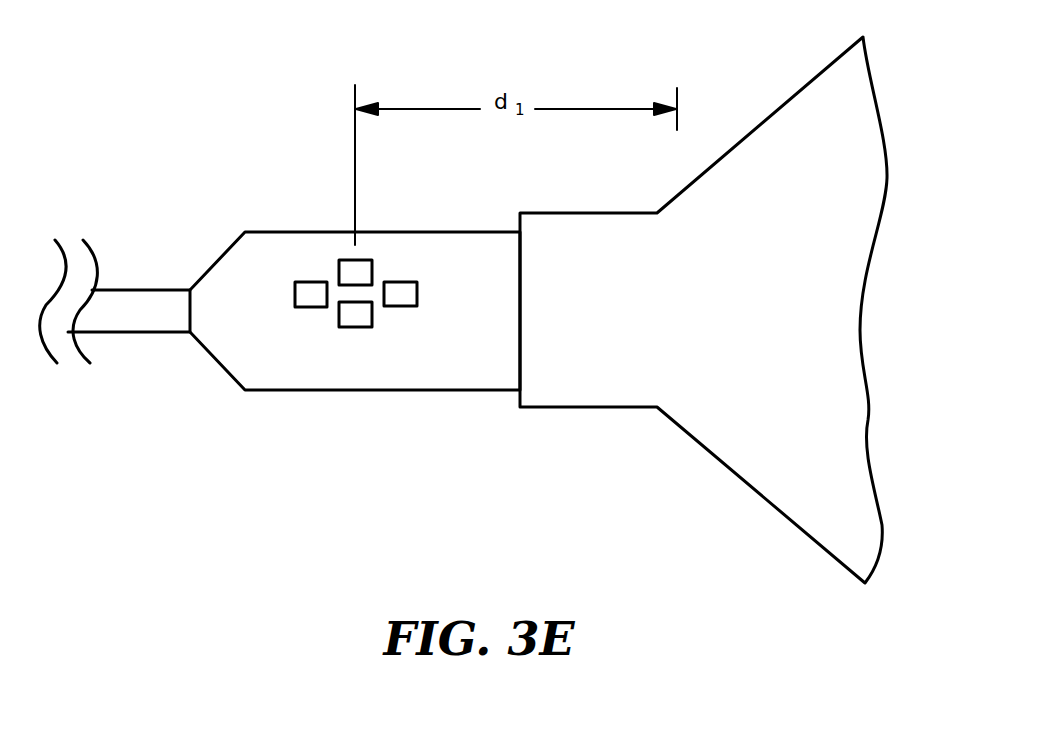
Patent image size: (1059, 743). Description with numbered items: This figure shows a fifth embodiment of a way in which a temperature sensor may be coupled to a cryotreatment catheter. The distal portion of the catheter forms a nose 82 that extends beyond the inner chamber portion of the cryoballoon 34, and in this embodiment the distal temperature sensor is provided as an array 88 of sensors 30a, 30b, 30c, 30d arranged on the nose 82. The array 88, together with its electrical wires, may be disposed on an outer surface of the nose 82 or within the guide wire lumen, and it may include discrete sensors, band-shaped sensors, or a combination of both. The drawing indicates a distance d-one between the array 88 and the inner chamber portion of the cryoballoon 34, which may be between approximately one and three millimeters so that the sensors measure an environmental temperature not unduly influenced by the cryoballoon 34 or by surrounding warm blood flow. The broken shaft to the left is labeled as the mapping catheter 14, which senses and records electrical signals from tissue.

The mapping catheter 14 is at (118, 312).
The sensor 30a is at (296, 294).
The sensor 30b is at (352, 270).
The sensor 30c is at (405, 295).
The sensor 30d is at (357, 312).
The cryoballoon 34 is at (735, 478).
The nose 82 is at (234, 434).
The array 88 is at (430, 339).